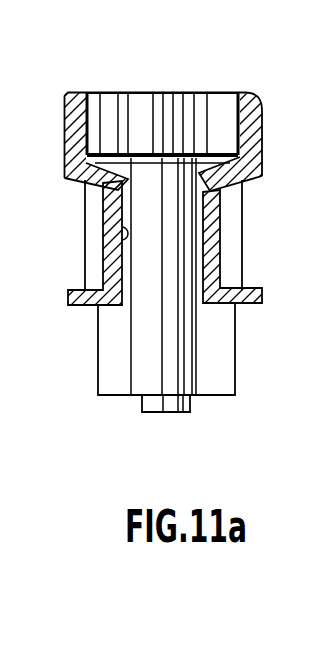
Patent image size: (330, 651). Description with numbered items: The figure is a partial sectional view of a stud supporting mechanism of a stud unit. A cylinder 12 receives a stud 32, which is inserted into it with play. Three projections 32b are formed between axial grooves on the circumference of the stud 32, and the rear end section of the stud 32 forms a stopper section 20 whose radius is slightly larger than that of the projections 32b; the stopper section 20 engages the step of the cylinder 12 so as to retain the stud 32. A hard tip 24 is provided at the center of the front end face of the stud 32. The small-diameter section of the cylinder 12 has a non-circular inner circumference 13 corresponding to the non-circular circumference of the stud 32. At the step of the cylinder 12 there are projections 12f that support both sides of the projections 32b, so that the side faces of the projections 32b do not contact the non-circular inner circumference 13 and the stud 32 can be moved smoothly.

The cylinder 12 is at (262, 126).
The projections 12f is at (168, 153).
The inner circumference 13 is at (122, 234).
The stopper section 20 is at (205, 151).
The hard tip 24 is at (185, 405).
The stud 32 is at (129, 150).
The projections 32b is at (98, 347).